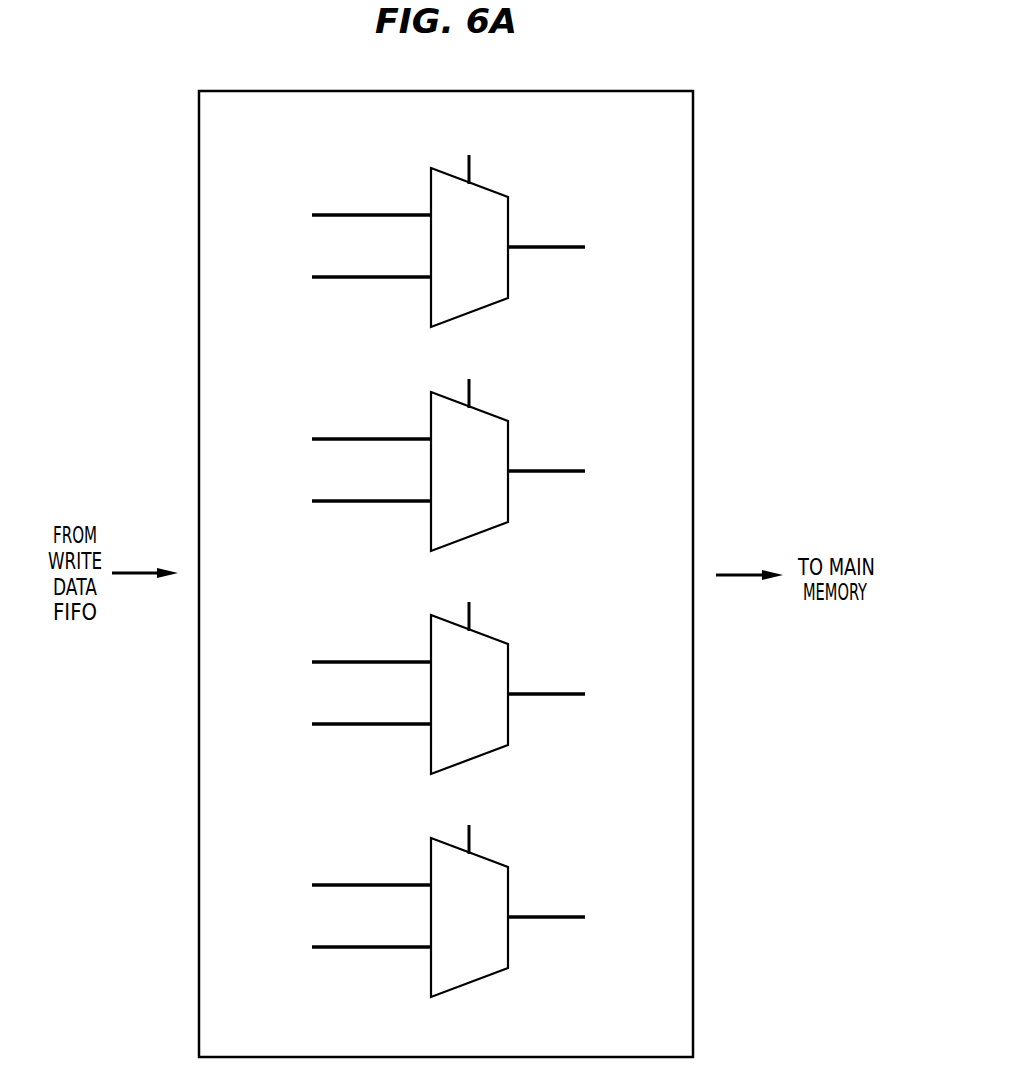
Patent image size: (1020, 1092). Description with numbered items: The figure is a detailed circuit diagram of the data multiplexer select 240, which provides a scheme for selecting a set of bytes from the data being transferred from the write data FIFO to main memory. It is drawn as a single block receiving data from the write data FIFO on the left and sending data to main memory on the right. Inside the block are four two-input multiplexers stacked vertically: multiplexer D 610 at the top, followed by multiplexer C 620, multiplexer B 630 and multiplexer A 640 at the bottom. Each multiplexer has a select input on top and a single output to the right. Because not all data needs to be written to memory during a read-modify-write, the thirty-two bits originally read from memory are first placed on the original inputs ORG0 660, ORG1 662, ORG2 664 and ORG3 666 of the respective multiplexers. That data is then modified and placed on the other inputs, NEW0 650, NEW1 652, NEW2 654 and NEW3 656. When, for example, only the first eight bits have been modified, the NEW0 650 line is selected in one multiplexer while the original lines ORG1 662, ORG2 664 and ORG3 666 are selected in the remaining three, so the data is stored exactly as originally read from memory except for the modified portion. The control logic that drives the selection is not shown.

The data multiplexer select 240 is at (628, 90).
The multiplexer D 610 is at (480, 307).
The multiplexer C 620 is at (480, 531).
The multiplexer B 630 is at (480, 754).
The multiplexer A 640 is at (480, 977).
The NEW0 input 650 is at (268, 868).
The NEW1 input 652 is at (268, 645).
The NEW2 input 654 is at (268, 422).
The NEW3 input 656 is at (268, 198).
The ORG0 input 660 is at (268, 963).
The ORG1 input 662 is at (268, 740).
The ORG2 input 664 is at (268, 517).
The ORG3 input 666 is at (268, 293).